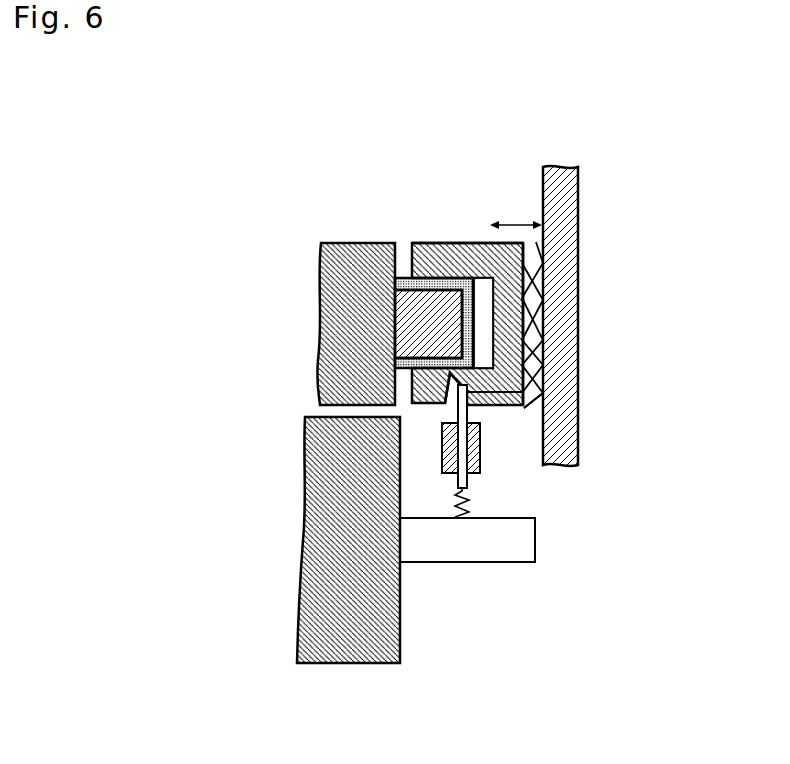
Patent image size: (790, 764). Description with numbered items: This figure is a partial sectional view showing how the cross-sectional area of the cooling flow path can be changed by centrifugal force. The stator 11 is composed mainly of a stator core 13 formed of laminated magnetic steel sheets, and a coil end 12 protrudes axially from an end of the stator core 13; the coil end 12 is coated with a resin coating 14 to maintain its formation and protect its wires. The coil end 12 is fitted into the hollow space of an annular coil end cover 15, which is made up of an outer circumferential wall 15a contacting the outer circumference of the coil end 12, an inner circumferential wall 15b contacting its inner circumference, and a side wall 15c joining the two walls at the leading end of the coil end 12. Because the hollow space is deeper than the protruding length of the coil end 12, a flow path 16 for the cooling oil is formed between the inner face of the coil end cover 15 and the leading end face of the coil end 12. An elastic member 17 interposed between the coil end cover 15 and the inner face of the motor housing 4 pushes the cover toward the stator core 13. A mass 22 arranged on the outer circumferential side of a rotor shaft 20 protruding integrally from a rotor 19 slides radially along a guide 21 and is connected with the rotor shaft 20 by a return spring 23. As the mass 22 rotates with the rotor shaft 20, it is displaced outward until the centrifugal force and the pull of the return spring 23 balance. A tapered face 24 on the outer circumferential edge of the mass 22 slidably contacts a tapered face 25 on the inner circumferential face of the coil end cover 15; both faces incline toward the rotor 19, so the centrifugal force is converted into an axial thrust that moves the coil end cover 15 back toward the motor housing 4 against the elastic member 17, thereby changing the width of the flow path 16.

The motor housing 4 is at (563, 302).
The stator 11 is at (323, 435).
The coil end 12 is at (418, 330).
The stator core 13 is at (367, 243).
The resin coating 14 is at (400, 270).
The coil end cover 15 is at (441, 230).
The outer circumferential wall 15a is at (463, 243).
The inner circumferential wall 15b is at (500, 405).
The side wall 15c is at (508, 288).
The flow path 16 is at (483, 290).
The elastic member 17 is at (525, 390).
The rotor 19 is at (343, 663).
The rotor shaft 20 is at (465, 548).
The guide 21 is at (478, 457).
The mass 22 is at (464, 410).
The return spring 23 is at (467, 507).
The tapered face 24 is at (522, 397).
The tapered face 25 is at (445, 403).